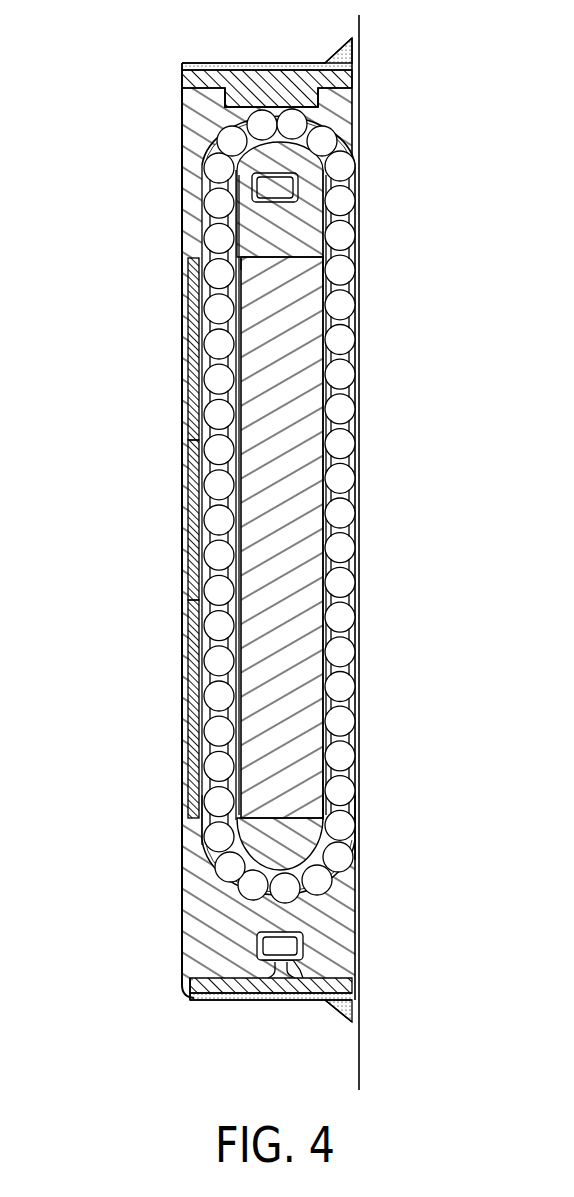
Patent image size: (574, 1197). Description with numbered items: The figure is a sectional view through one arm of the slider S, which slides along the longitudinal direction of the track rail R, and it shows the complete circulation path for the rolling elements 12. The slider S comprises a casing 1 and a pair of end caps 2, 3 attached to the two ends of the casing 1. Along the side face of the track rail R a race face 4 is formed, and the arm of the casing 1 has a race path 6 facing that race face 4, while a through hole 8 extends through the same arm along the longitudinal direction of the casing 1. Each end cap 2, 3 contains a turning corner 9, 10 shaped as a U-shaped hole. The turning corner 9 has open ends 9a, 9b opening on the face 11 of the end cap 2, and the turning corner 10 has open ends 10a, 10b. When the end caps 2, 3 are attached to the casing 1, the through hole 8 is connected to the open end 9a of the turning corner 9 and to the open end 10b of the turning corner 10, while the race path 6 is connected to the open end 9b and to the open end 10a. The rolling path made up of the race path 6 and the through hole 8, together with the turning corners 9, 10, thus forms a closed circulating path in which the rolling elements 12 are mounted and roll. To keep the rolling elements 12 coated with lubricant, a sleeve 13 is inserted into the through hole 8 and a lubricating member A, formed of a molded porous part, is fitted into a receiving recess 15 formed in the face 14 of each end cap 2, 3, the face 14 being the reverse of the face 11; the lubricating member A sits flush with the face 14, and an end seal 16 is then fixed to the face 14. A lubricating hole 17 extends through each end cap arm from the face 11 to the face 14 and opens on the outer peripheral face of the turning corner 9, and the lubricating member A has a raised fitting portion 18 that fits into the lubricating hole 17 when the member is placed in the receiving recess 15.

The casing 1 is at (280, 547).
The end cap 2 is at (268, 236).
The end cap 3 is at (278, 925).
The race face 4 is at (345, 568).
The race path 6 is at (344, 462).
The through hole 8 is at (196, 462).
The turning corner 9 is at (212, 150).
The open end 9a is at (188, 262).
The open end 9b is at (350, 251).
The turning corner 10 is at (272, 193).
The open end 10a is at (353, 820).
The open end 10b is at (208, 827).
The face 11 is at (292, 264).
The rolling elements 12 is at (216, 378).
The sleeve 13 is at (195, 622).
The face 14 is at (312, 68).
The receiving recess 15 is at (203, 80).
The end seal 16 is at (278, 68).
The lubricating hole 17 is at (319, 93).
The raised fitting portion 18 is at (316, 103).
The lubricating member A is at (186, 92).
The slider S is at (122, 354).
The track rail R is at (372, 384).